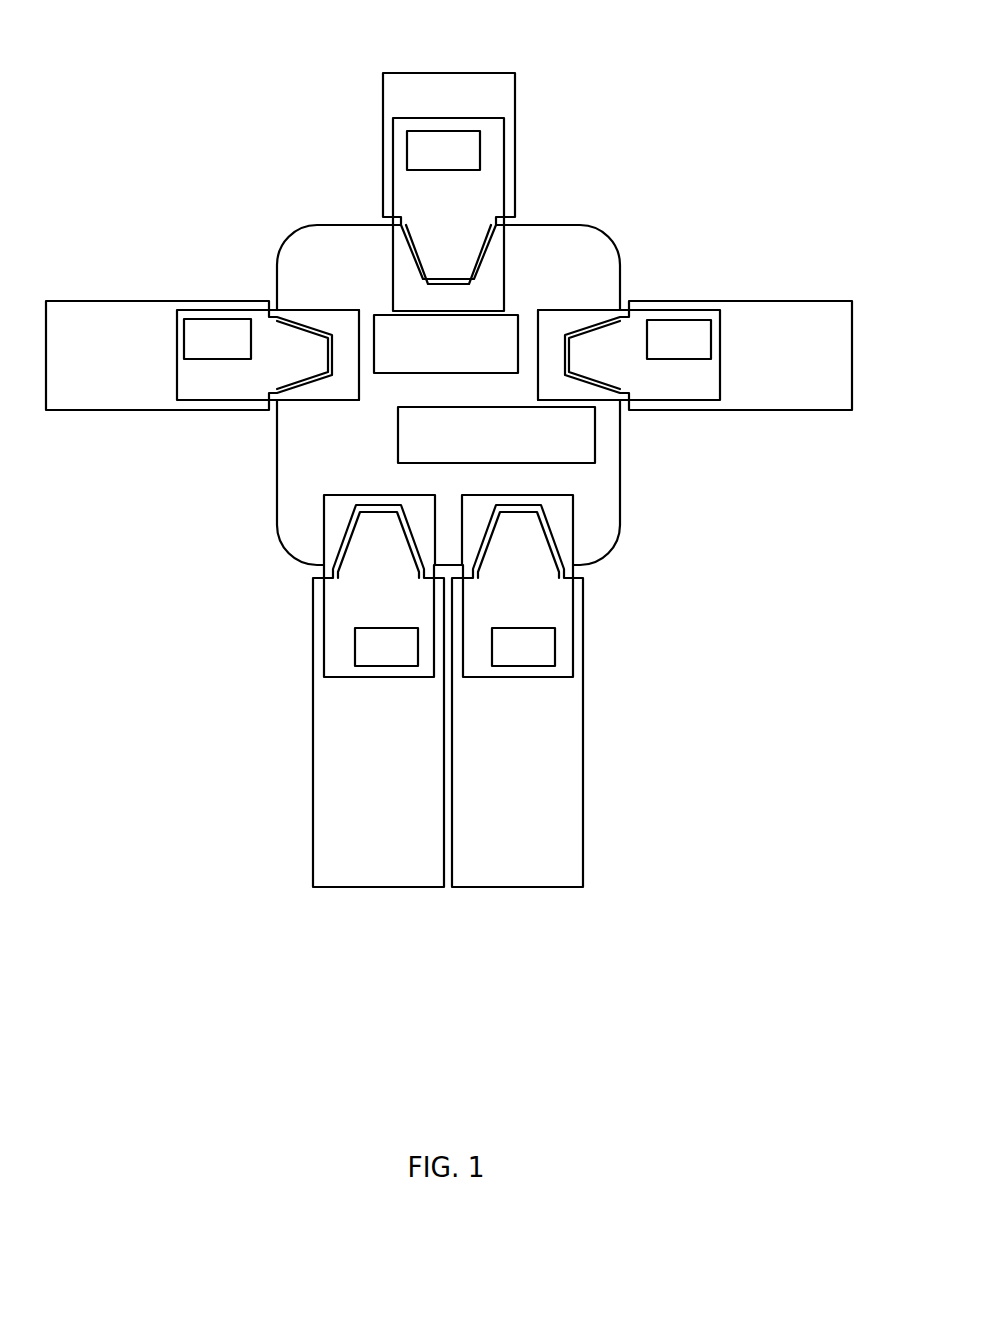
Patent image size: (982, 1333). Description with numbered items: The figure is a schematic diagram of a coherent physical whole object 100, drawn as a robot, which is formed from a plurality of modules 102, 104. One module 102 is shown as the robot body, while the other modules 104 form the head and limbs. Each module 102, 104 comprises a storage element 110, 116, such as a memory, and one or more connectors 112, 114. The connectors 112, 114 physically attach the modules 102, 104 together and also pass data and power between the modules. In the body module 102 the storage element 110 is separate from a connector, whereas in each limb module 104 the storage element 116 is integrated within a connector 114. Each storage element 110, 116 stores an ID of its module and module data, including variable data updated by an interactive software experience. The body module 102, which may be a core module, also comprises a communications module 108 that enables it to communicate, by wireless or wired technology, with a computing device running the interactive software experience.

The coherent physical whole object 100 is at (605, 88).
The module 102 is at (605, 231).
The module 104 is at (436, 73).
The communications module 108 is at (473, 463).
The storage element 110 is at (430, 373).
The connector 112 is at (308, 310).
The connector 114 is at (177, 385).
The storage element 116 is at (251, 338).